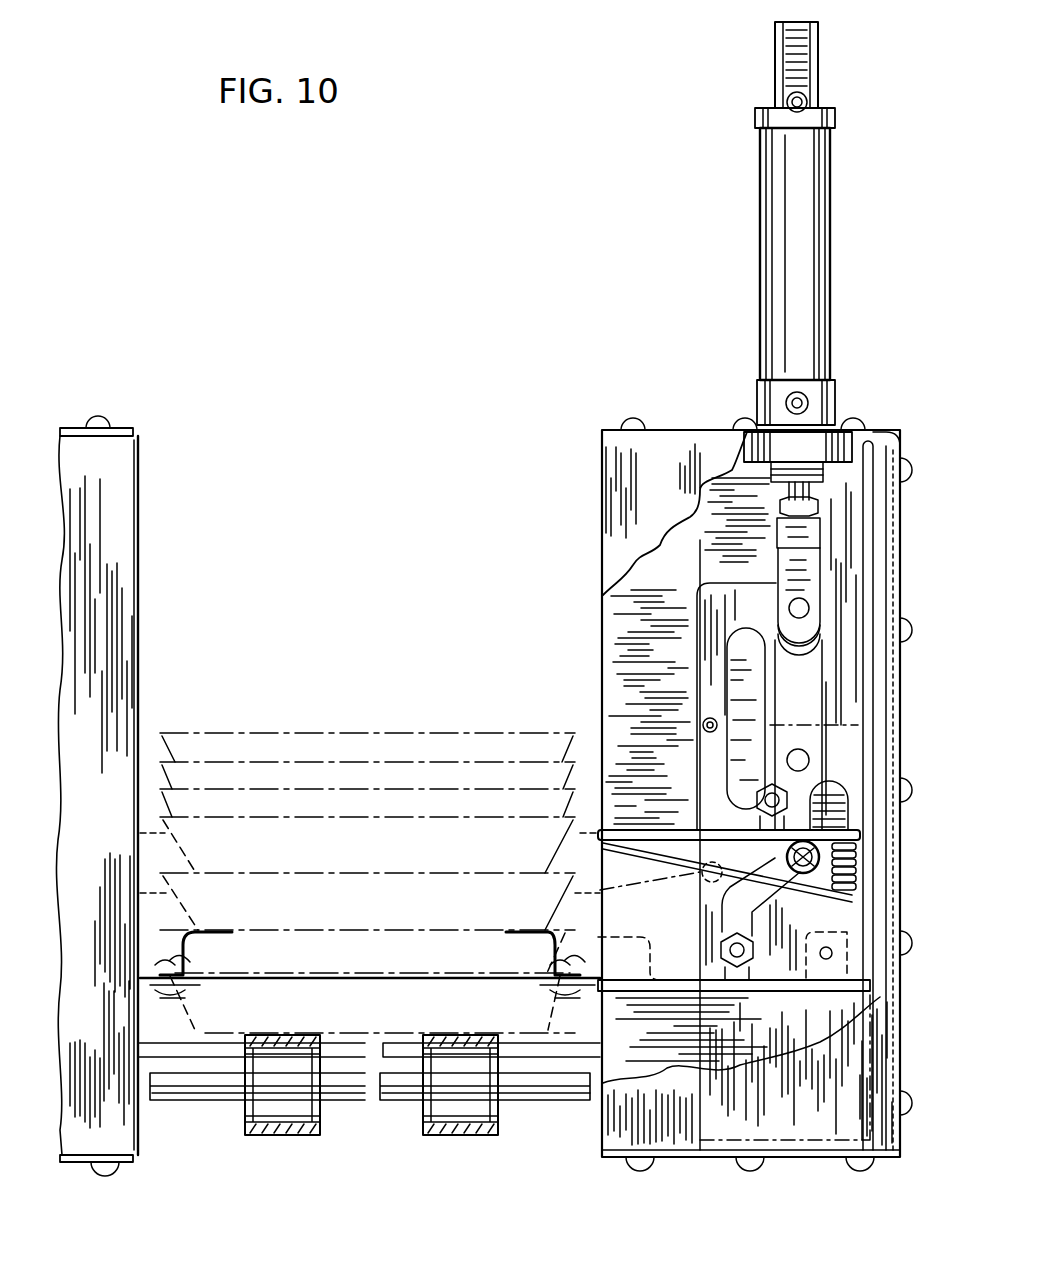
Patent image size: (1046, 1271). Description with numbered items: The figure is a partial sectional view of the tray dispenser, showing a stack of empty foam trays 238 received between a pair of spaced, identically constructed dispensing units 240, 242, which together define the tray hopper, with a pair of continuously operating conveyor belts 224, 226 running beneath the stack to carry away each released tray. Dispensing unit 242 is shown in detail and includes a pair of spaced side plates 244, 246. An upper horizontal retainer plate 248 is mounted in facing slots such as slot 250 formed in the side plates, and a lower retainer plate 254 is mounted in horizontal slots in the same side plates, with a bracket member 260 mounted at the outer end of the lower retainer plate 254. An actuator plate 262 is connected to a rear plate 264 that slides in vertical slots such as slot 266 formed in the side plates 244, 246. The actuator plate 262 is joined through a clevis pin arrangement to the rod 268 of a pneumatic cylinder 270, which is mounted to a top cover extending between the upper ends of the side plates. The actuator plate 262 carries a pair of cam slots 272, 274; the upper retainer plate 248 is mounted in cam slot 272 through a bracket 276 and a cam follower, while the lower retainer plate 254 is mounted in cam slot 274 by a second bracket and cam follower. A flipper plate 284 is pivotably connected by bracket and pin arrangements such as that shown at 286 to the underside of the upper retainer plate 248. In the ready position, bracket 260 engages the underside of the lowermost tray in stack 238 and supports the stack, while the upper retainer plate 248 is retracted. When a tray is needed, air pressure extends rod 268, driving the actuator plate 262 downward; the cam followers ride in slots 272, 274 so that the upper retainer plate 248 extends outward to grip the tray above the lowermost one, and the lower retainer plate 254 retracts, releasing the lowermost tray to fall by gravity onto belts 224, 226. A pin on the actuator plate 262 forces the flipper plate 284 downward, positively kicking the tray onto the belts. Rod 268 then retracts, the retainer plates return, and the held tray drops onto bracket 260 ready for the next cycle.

The conveyor belt 224 is at (288, 1136).
The conveyor belt 226 is at (456, 1136).
The stack of empty foam trays 238 is at (396, 716).
The dispensing unit 240 is at (155, 540).
The dispensing unit 242 is at (596, 498).
The side plate 244 is at (672, 548).
The side plate 246 is at (650, 709).
The upper horizontal retainer plate 248 is at (616, 830).
The slot 250 is at (868, 798).
The lower retainer plate 254 is at (625, 991).
The bracket member 260 is at (537, 936).
The actuator plate 262 is at (697, 658).
The rear plate 264 is at (858, 506).
The vertical slot 266 is at (872, 430).
The rod 268 is at (790, 488).
The pneumatic cylinder 270 is at (768, 281).
The cam slot 272 is at (735, 696).
The cam slot 274 is at (778, 912).
The bracket 276 is at (755, 798).
The flipper plate 284 is at (668, 850).
The bracket and pin arrangement 286 is at (703, 725).